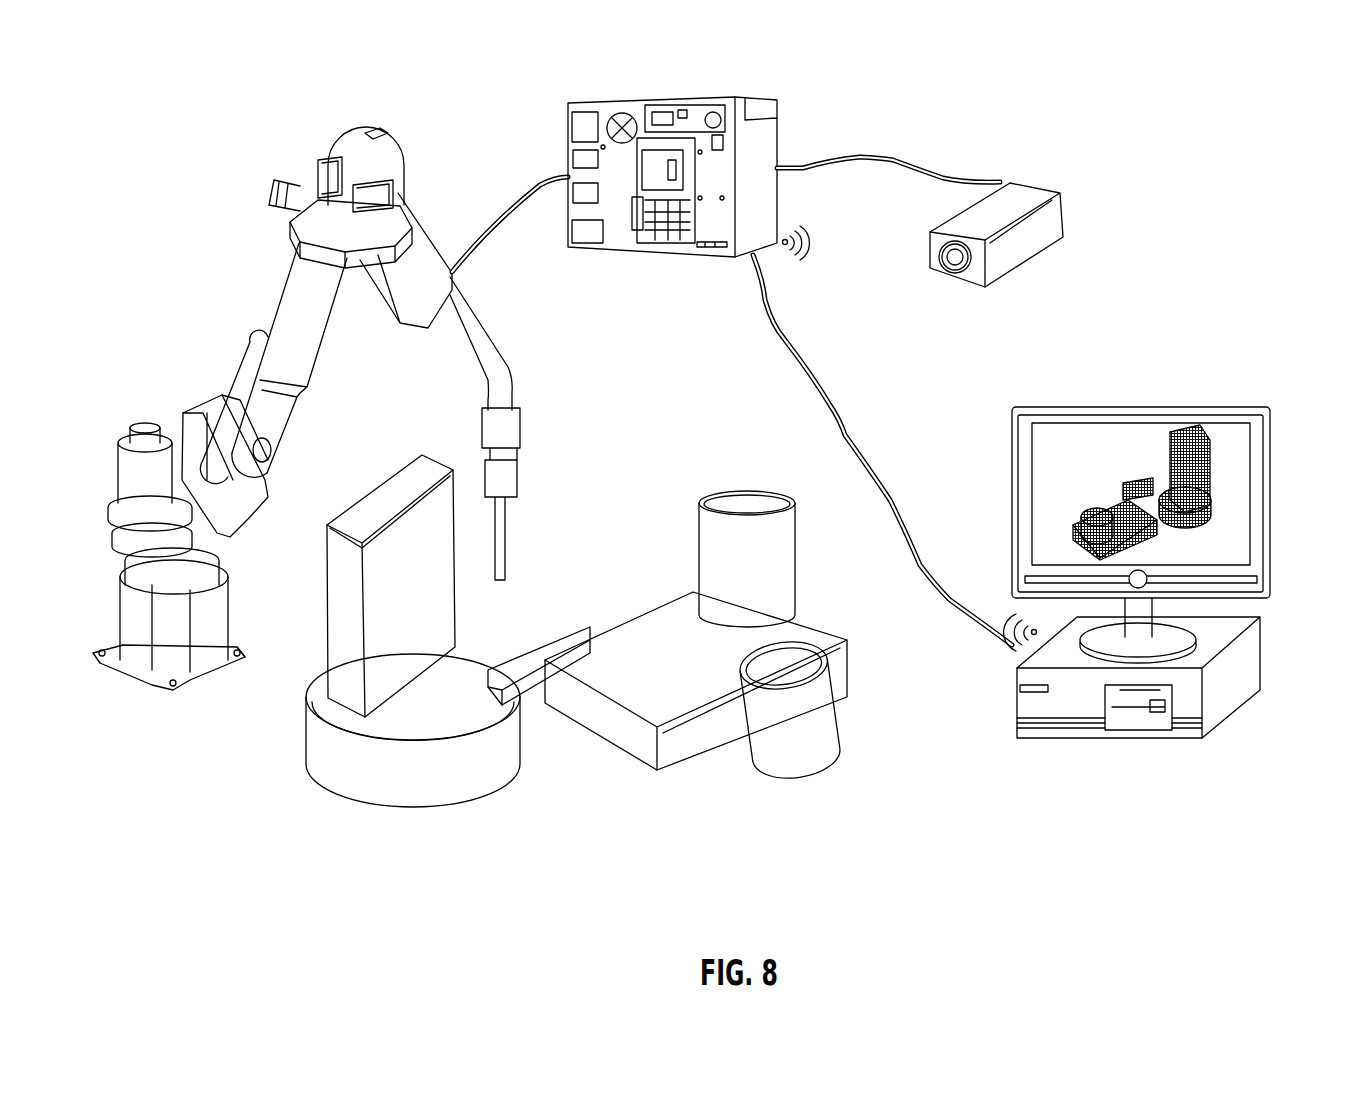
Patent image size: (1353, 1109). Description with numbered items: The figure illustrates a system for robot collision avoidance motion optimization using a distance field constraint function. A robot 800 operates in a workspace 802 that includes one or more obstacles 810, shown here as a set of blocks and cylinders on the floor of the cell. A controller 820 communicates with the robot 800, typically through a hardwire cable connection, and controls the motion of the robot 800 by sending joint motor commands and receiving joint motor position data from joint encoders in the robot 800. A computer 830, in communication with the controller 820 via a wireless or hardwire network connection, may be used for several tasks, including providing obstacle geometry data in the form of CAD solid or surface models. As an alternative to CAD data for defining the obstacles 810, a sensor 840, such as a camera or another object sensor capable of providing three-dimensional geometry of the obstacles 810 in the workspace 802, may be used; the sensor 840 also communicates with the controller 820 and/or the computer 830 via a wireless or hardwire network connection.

The robot 800 is at (421, 170).
The workspace 802 is at (855, 795).
The obstacles 810 is at (640, 518).
The controller 820 is at (653, 100).
The computer 830 is at (1230, 388).
The sensor 840 is at (1038, 183).